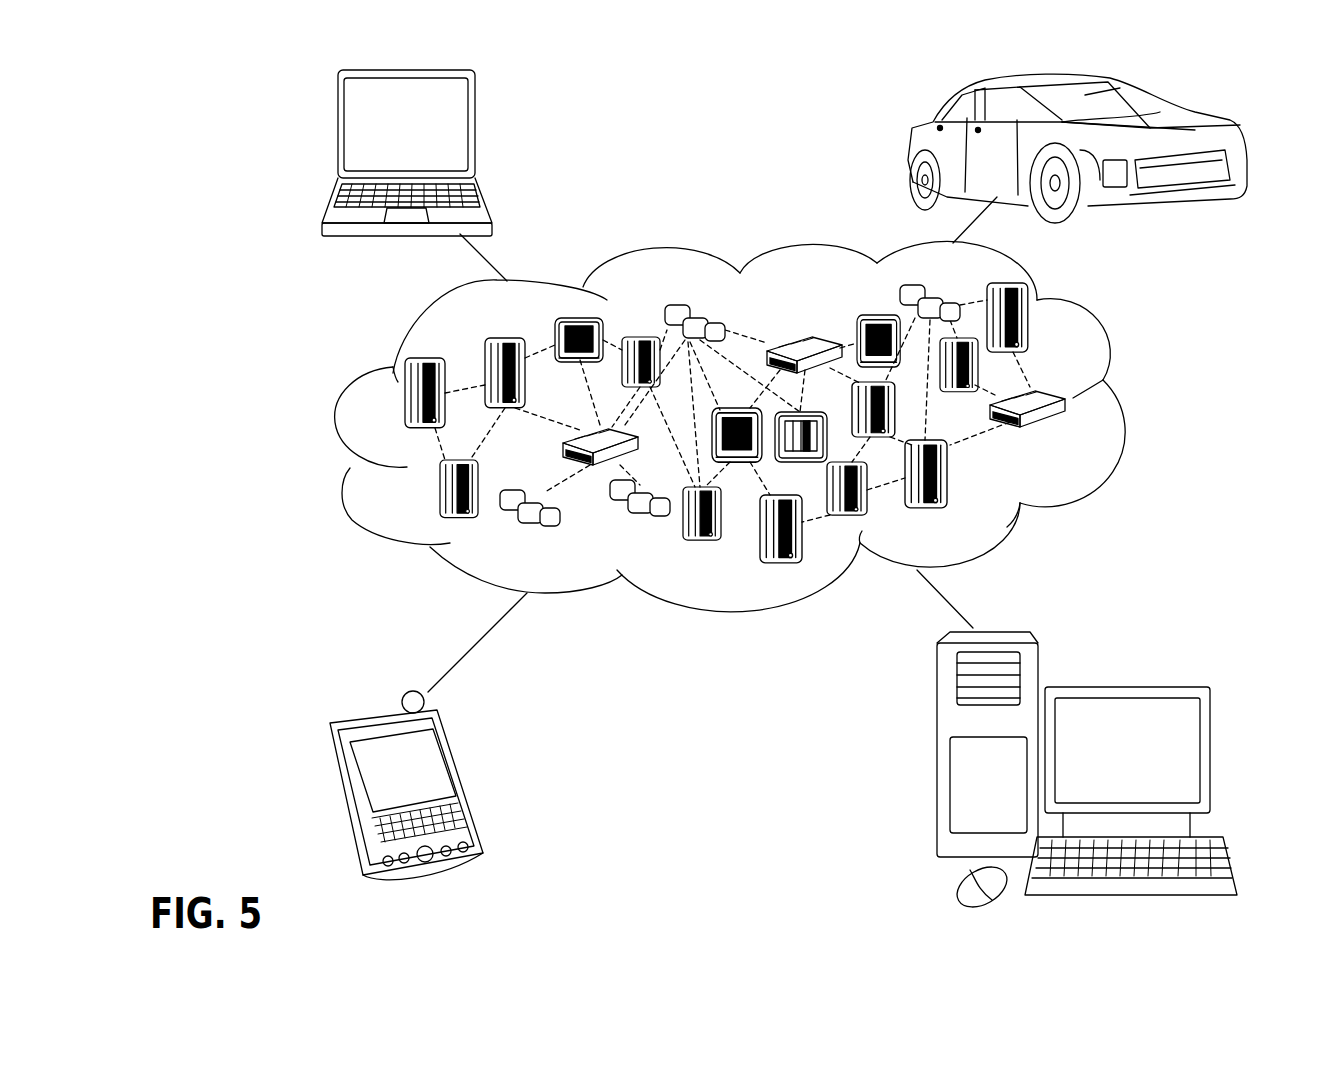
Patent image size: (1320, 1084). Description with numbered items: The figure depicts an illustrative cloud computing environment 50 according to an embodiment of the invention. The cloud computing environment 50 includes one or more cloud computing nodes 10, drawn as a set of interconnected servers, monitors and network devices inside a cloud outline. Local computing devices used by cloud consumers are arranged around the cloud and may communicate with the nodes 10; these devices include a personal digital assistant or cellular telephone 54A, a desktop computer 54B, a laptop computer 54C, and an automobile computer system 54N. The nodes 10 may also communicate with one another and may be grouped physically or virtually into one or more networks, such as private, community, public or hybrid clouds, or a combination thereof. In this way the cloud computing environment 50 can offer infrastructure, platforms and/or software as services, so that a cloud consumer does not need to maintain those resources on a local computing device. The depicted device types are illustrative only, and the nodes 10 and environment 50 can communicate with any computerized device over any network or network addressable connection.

The cloud computing nodes 10 is at (1067, 433).
The cloud computing environment 50 is at (1127, 400).
The personal digital assistant (PDA) or cellular telephone 54A is at (466, 786).
The desktop computer 54B is at (1124, 684).
The laptop computer 54C is at (488, 131).
The automobile computer system 54N is at (908, 152).